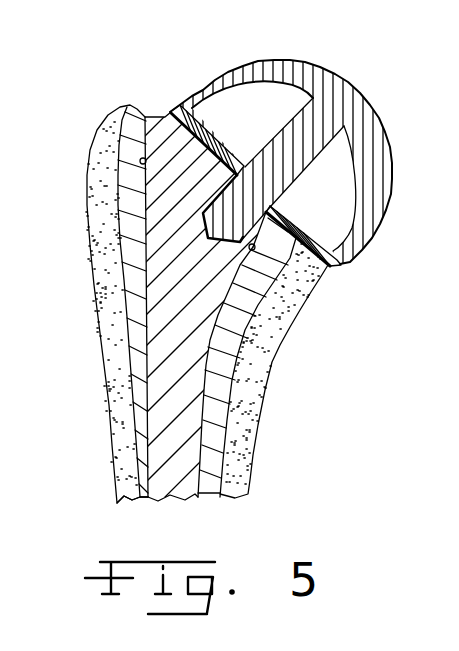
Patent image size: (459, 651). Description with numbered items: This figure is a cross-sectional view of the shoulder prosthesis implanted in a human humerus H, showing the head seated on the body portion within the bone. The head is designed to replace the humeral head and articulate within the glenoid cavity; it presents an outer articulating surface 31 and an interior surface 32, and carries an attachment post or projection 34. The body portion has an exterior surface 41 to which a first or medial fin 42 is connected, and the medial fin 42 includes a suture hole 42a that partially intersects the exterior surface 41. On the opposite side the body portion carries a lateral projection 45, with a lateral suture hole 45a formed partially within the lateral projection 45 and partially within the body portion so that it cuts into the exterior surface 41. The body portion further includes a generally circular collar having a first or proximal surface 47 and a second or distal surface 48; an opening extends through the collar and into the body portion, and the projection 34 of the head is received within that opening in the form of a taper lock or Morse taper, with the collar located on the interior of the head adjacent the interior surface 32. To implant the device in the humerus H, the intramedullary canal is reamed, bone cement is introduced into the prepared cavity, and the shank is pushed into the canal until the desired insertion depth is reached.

The articulating surface 31 is at (352, 83).
The interior surface 32 is at (347, 208).
The attachment post 34 is at (298, 158).
The exterior surface 41 is at (145, 197).
The medial fin 42 is at (297, 258).
The suture hole 42a is at (298, 300).
The lateral projection 45 is at (143, 172).
The lateral suture hole 45a is at (120, 140).
The proximal surface 47 is at (210, 128).
The distal surface 48 is at (333, 265).
The host femur bone H is at (247, 443).